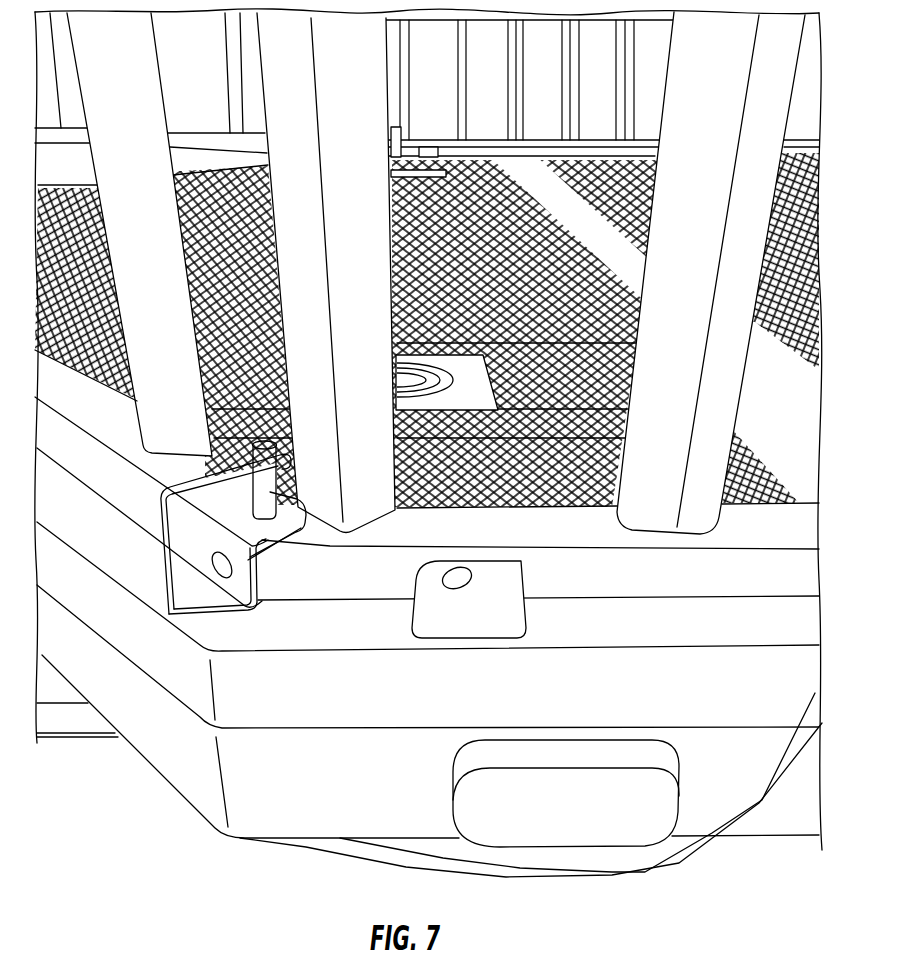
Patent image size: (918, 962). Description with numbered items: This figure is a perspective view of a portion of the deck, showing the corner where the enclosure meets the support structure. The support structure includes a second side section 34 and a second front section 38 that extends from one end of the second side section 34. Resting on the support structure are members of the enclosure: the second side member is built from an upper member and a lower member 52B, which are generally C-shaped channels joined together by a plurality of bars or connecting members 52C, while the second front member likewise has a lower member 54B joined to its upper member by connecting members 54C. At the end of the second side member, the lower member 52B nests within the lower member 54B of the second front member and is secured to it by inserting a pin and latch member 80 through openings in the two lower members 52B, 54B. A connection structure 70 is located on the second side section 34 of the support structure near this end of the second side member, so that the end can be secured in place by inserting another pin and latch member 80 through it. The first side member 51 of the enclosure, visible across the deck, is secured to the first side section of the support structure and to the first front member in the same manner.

The second side section 34 is at (277, 803).
The second front section 38 is at (120, 703).
The first side member 51 is at (558, 226).
The lower member 52B is at (453, 542).
The connecting members 52C is at (379, 302).
The lower member 54B is at (90, 404).
The connecting members 54C is at (177, 337).
The connection structure 70 is at (489, 577).
The pin and latch member 80 is at (262, 493).